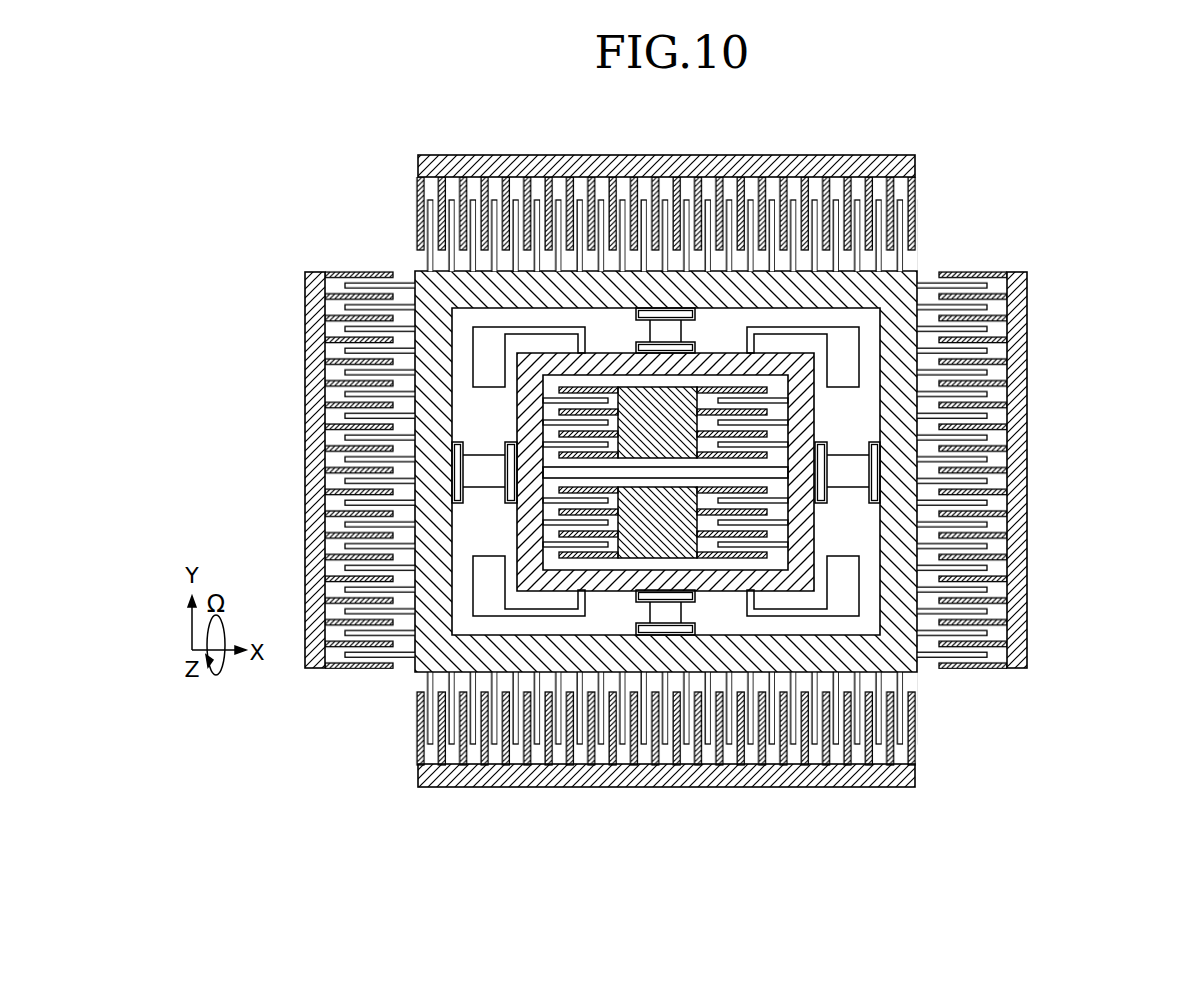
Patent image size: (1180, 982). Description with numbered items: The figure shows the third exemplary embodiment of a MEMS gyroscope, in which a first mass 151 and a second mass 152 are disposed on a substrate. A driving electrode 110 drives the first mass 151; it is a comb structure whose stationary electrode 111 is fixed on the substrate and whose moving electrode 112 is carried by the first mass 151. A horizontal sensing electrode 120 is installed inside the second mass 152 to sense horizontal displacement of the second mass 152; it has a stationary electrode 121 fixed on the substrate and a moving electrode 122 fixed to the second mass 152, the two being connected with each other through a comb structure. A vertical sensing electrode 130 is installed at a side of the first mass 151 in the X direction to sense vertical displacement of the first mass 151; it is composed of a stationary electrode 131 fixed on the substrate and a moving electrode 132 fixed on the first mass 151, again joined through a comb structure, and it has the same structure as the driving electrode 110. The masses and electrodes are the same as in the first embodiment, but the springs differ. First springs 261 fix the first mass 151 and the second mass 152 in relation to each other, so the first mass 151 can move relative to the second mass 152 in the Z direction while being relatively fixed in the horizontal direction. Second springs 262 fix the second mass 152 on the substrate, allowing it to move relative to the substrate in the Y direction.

The driving electrode 110 is at (865, 56).
The stationary electrode 111 is at (762, 168).
The moving electrode 112 is at (812, 203).
The horizontal sensing electrode 120 is at (1122, 317).
The stationary electrode 121 is at (680, 397).
The moving electrode 122 is at (772, 422).
The vertical sensing electrode 130 is at (192, 295).
The stationary electrode 131 is at (313, 317).
The moving electrode 132 is at (354, 394).
The first mass 151 is at (432, 468).
The second mass 152 is at (518, 578).
The first spring 261 is at (852, 482).
The second spring 262 is at (805, 330).